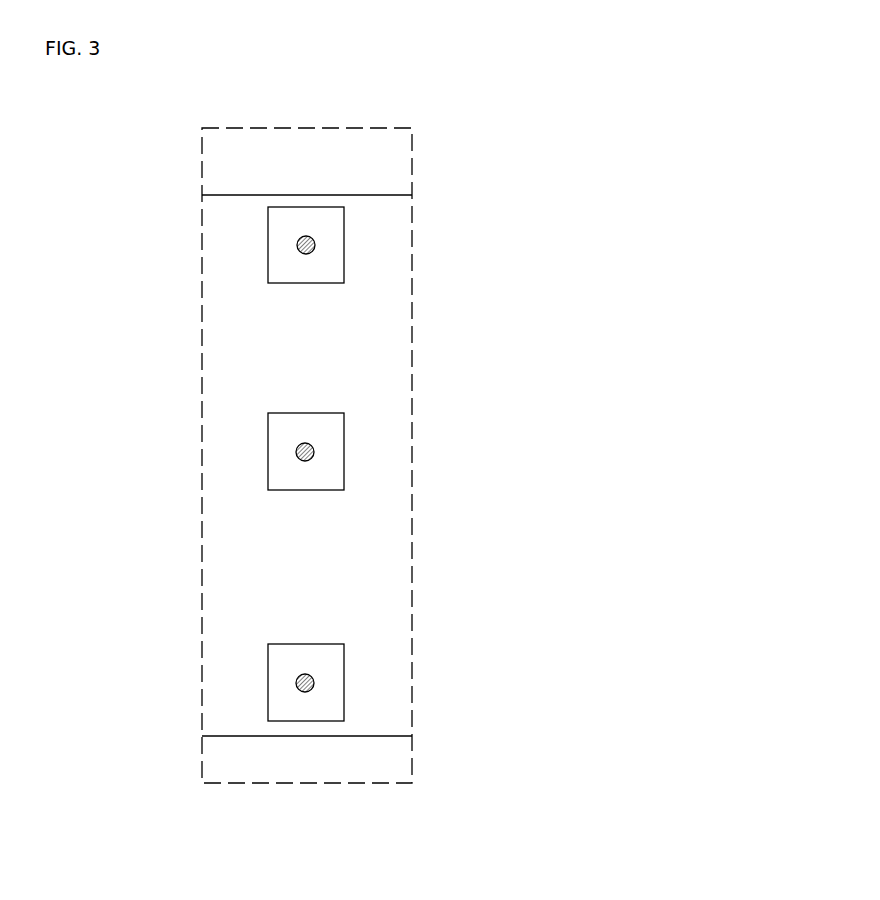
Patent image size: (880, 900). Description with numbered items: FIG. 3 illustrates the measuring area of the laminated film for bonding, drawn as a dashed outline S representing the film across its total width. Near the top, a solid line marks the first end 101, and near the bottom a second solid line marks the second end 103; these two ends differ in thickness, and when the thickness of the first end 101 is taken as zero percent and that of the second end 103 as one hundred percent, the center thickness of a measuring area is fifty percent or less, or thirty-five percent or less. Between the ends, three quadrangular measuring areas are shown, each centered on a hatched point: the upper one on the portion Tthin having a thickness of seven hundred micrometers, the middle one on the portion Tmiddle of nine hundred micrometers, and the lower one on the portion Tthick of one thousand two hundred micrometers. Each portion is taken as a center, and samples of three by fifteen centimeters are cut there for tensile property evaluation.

The substrate S is at (412, 162).
The first end 101 is at (198, 197).
The second end 103 is at (198, 738).
The thin thickness portion Tthin is at (315, 242).
The middle thickness portion Tmiddle is at (314, 450).
The thick thickness portion Tthick is at (314, 680).